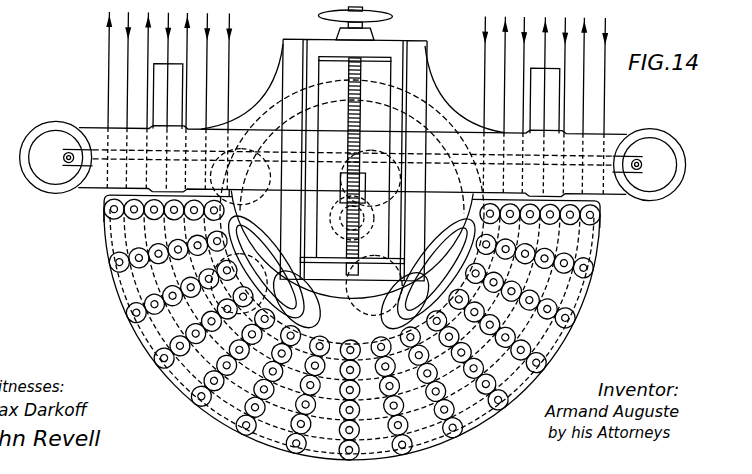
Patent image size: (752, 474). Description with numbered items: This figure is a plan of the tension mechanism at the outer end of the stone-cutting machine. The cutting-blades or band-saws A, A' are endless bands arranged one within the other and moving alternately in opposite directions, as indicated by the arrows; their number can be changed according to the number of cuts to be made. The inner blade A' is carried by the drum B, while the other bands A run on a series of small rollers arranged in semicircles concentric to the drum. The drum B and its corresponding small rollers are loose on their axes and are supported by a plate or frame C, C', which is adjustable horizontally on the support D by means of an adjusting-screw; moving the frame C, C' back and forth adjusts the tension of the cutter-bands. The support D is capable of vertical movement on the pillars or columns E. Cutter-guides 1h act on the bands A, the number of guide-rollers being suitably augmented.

The cutting-blade or band-saw A is at (168, 88).
The inner blade A' is at (514, 100).
The cutter-guides 1h is at (356, 103).
The drum B is at (352, 190).
The plate or frame C is at (318, 177).
The plate or frame C' is at (369, 141).
The support D is at (351, 270).
The pillars or columns E is at (352, 161).